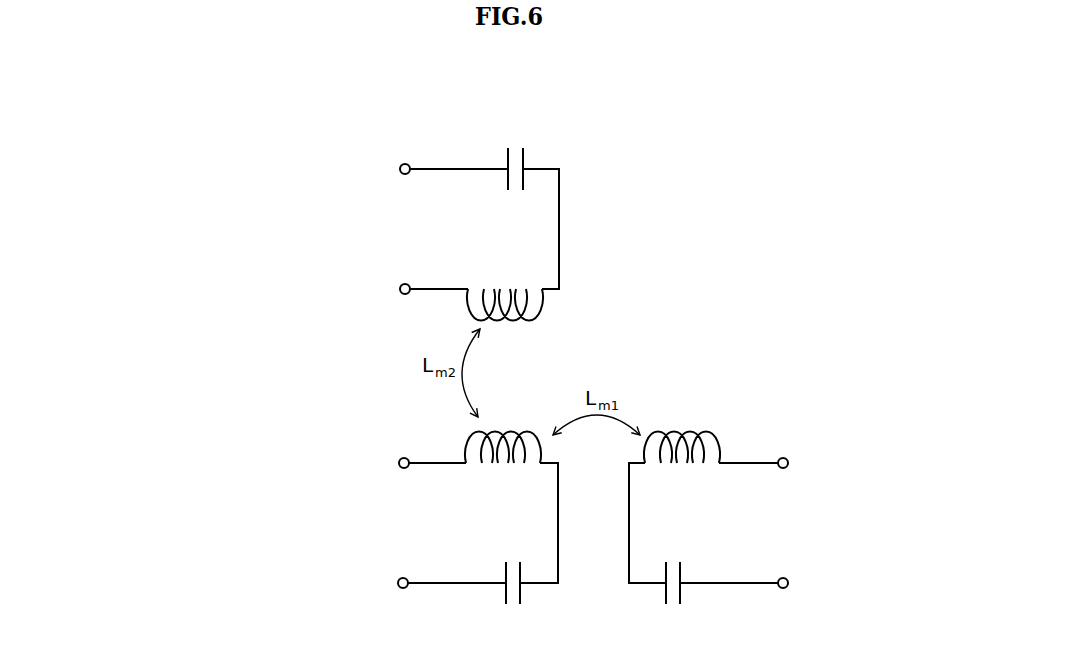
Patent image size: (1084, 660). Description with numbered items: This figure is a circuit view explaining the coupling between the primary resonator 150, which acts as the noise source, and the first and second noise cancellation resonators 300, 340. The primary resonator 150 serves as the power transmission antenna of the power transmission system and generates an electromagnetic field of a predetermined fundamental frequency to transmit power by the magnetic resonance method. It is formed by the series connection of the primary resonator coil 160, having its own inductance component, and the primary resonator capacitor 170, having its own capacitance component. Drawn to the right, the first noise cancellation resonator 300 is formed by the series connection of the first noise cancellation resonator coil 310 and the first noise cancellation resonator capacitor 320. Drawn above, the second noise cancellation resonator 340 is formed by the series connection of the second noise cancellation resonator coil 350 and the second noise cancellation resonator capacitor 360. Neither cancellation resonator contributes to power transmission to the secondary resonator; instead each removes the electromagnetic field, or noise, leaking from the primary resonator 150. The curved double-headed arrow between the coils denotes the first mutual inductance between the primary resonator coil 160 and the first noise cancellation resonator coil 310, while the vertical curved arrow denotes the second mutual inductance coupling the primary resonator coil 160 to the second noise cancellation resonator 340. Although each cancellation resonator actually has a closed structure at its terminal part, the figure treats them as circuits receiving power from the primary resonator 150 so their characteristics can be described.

The primary resonator 150 is at (312, 534).
The primary resonator coil 160 is at (458, 439).
The primary resonator capacitor 170 is at (496, 570).
The first noise cancellation resonator 300 is at (722, 368).
The first noise cancellation resonator coil 310 is at (727, 445).
The first noise cancellation resonator capacitor 320 is at (692, 562).
The second noise cancellation resonator 340 is at (328, 210).
The second noise cancellation resonator coil 350 is at (472, 280).
The second noise cancellation resonator capacitor 360 is at (497, 154).